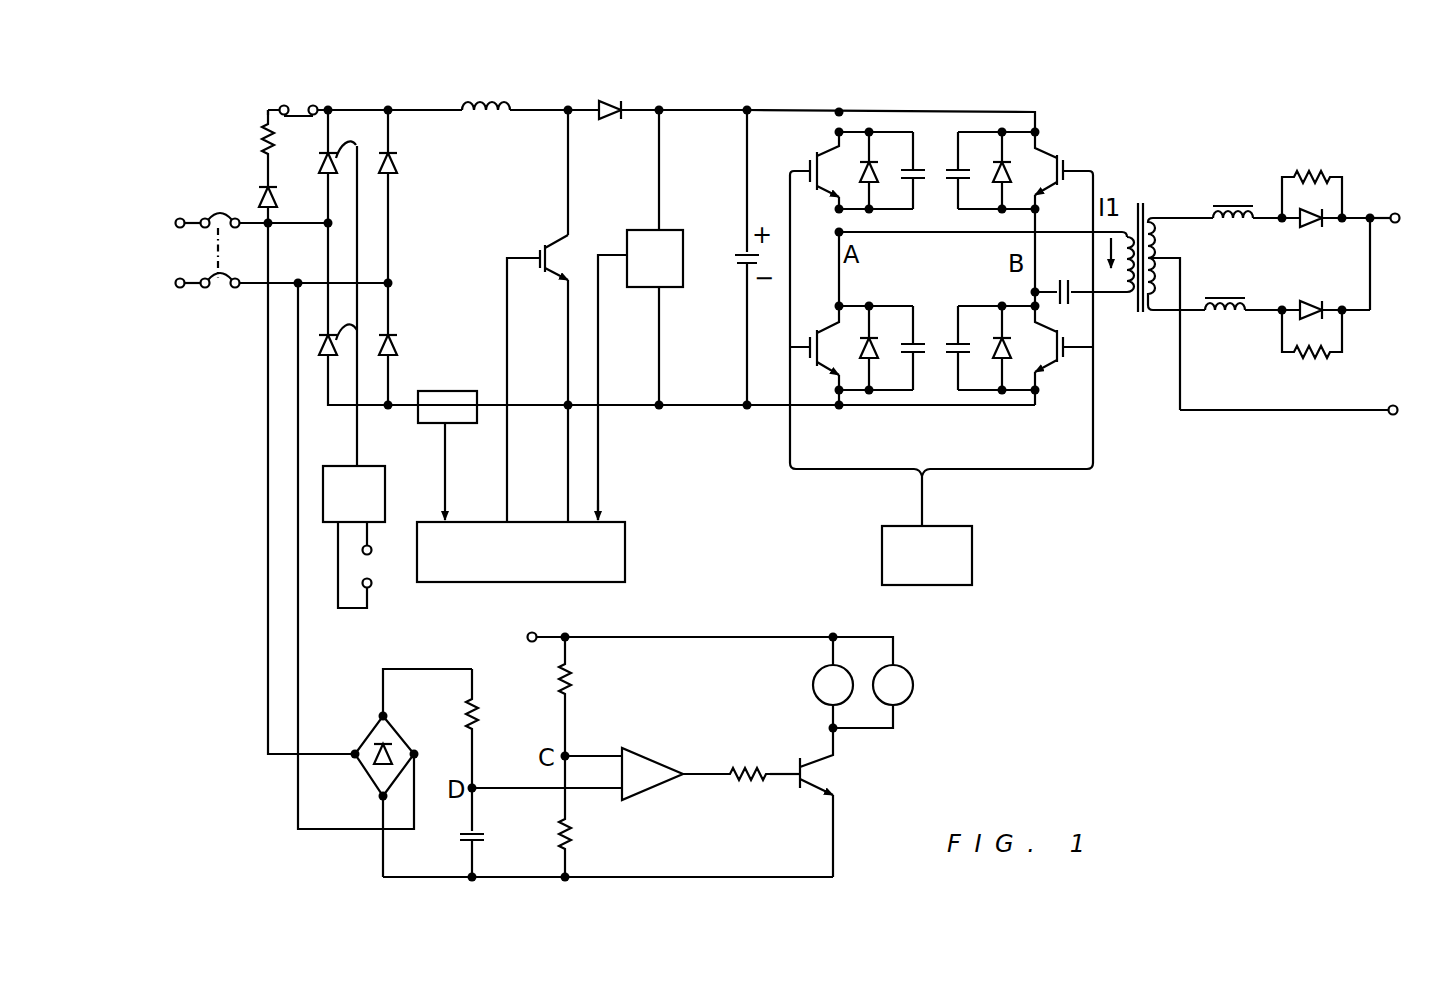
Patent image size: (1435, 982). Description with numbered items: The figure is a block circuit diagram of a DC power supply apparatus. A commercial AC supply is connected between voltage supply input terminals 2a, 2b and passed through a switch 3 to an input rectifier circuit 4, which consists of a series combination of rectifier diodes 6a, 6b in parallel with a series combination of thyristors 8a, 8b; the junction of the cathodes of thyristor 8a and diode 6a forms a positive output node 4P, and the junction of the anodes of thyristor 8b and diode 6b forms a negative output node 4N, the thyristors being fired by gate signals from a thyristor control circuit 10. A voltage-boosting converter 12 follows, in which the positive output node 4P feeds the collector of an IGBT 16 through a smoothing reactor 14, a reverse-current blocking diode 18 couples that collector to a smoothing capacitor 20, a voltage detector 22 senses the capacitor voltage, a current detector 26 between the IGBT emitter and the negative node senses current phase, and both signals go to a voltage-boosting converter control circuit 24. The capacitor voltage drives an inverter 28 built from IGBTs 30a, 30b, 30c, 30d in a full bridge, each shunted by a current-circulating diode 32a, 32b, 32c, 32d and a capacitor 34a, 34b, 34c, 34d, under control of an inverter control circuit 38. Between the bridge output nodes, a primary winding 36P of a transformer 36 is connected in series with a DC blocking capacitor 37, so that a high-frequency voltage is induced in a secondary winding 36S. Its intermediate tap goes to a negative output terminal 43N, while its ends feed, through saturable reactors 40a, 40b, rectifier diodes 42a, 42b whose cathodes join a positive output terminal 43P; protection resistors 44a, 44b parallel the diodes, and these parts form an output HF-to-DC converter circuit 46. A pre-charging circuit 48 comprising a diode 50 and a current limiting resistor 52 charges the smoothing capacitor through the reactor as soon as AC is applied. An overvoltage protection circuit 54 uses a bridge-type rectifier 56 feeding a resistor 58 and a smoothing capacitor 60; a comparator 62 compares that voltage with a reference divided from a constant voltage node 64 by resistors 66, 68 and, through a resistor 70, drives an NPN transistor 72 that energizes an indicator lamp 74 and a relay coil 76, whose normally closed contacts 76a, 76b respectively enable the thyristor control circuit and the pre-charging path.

The voltage supply input terminal 2a is at (182, 218).
The voltage supply input terminal 2b is at (183, 289).
The switch 3 is at (226, 245).
The input rectifier circuit 4 is at (395, 90).
The positive output node 4P is at (405, 108).
The negative output node 4N is at (396, 402).
The rectifier diode 6a is at (396, 166).
The rectifier diode 6b is at (396, 348).
The thyristor 8a is at (321, 170).
The thyristor 8b is at (318, 362).
The thyristor control circuit 10 is at (386, 470).
The voltage-boosting converter 12 is at (590, 90).
The smoothing reactor 14 is at (497, 117).
The IGBT 16 is at (537, 359).
The reverse-current blocking diode 18 is at (614, 103).
The smoothing capacitor 20 is at (737, 258).
The voltage detector 22 is at (670, 290).
The voltage-boosting converter control circuit 24 is at (626, 548).
The current detector 26 is at (478, 394).
The inverter 28 is at (965, 105).
The IGBT 30a is at (826, 168).
The IGBT 30b is at (826, 372).
The IGBT 30c is at (1070, 172).
The IGBT 30d is at (1044, 372).
The current-circulating diode 32a is at (878, 178).
The current-circulating diode 32b is at (878, 360).
The current-circulating diode 32c is at (1012, 180).
The current-circulating diode 32d is at (992, 362).
The capacitor 34a is at (924, 173).
The capacitor 34b is at (925, 352).
The capacitor 34c is at (968, 172).
The capacitor 34d is at (975, 352).
The transformer 36 is at (1154, 250).
The primary winding 36P is at (1116, 295).
The secondary winding 36S is at (1160, 242).
The DC blocking capacitor 37 is at (1070, 303).
The inverter control circuit 38 is at (966, 578).
The saturable reactor 40a is at (1232, 224).
The saturable reactor 40b is at (1230, 318).
The rectifier diode 42a is at (1308, 230).
The rectifier diode 42b is at (1313, 297).
The positive output terminal 43P is at (1395, 213).
The negative output terminal 43N is at (1393, 416).
The protection resistor 44a is at (1308, 172).
The protection resistor 44b is at (1313, 356).
The output HF-to-DC converter circuit 46 is at (1272, 145).
The pre-charging circuit 48 is at (237, 90).
The diode 50 is at (276, 207).
The current limiting resistor 52 is at (263, 140).
The overvoltage protection circuit 54 is at (700, 917).
The bridge-type rectifier 56 is at (373, 781).
The resistor 58 is at (480, 724).
The smoothing capacitor 60 is at (460, 838).
The comparator 62 is at (661, 772).
The voltage node 64 is at (538, 636).
The resistor 66 is at (571, 681).
The resistor 68 is at (572, 838).
The resistor 70 is at (757, 781).
The NPN transistor 72 is at (810, 773).
The indicator lamp 74 is at (913, 687).
The relay coil 76 is at (813, 683).
The normally closed contact 76a is at (370, 590).
The normally closed contact 76b is at (296, 105).